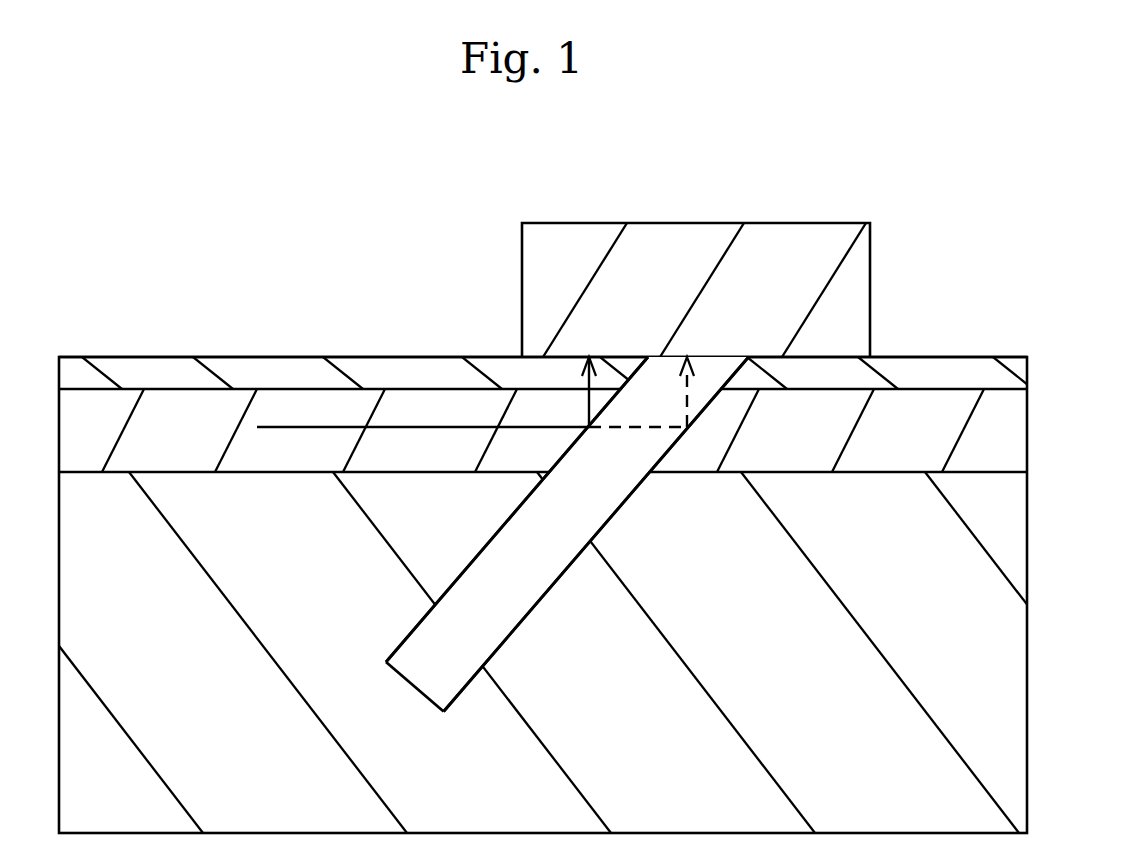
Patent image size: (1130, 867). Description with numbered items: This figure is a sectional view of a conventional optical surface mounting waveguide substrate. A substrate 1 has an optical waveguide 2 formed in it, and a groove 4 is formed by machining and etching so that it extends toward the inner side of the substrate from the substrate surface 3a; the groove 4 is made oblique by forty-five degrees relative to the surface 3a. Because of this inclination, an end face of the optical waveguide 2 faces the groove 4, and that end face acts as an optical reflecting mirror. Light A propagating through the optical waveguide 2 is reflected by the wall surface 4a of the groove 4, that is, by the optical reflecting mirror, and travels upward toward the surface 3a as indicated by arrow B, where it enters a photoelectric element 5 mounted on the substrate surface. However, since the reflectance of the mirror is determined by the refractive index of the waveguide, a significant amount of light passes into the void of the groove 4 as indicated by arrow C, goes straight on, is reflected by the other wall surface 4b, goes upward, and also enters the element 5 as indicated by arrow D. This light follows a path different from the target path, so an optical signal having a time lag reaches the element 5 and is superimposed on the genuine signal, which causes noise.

The substrate 1 is at (1005, 688).
The optical waveguide 2 is at (1010, 427).
The substrate surface 3a is at (937, 353).
The groove 4 is at (545, 567).
The wall surface 4a is at (477, 560).
The other wall surface 4b is at (638, 487).
The photoelectric element 5 is at (850, 272).
The light A is at (345, 427).
The arrow B is at (585, 383).
The arrow C is at (623, 430).
The arrow D is at (689, 392).